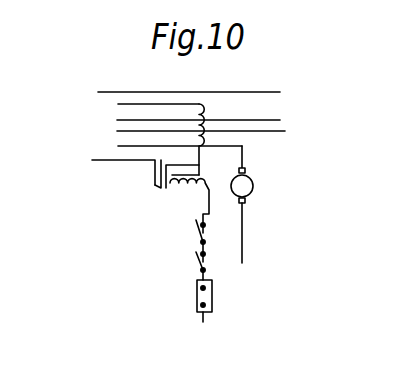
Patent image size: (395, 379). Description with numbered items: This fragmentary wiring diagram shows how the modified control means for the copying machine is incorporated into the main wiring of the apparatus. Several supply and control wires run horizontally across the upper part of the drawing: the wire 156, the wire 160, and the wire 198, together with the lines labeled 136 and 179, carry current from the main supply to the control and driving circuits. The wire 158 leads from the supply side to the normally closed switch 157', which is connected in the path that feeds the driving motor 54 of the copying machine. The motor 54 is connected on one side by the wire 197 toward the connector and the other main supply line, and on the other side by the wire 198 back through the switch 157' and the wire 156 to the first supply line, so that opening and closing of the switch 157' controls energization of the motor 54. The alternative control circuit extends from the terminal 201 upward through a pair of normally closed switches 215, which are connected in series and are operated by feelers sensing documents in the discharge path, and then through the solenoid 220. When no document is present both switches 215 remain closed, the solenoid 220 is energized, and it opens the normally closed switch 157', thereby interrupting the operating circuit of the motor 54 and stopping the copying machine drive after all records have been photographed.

The supply line 136 is at (142, 91).
The wire 156 is at (118, 104).
The wire 160 is at (118, 120).
The conductor 179 is at (118, 131).
The wire 198 is at (118, 146).
The wire 158 is at (112, 161).
The normally closed switch 157' is at (139, 186).
The solenoid 220 is at (186, 186).
The motor 54 is at (250, 176).
The wire 197 is at (245, 246).
The normally closed switches 215 is at (197, 236).
The terminal 201 is at (197, 300).